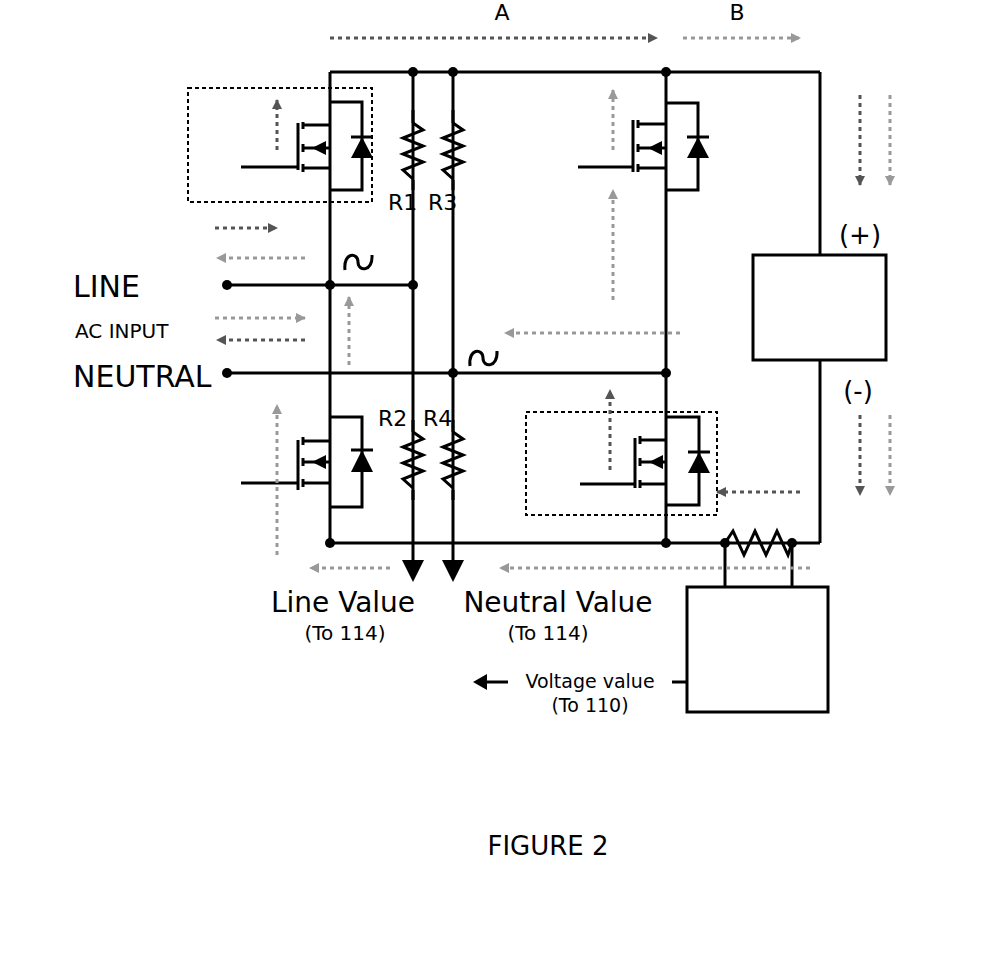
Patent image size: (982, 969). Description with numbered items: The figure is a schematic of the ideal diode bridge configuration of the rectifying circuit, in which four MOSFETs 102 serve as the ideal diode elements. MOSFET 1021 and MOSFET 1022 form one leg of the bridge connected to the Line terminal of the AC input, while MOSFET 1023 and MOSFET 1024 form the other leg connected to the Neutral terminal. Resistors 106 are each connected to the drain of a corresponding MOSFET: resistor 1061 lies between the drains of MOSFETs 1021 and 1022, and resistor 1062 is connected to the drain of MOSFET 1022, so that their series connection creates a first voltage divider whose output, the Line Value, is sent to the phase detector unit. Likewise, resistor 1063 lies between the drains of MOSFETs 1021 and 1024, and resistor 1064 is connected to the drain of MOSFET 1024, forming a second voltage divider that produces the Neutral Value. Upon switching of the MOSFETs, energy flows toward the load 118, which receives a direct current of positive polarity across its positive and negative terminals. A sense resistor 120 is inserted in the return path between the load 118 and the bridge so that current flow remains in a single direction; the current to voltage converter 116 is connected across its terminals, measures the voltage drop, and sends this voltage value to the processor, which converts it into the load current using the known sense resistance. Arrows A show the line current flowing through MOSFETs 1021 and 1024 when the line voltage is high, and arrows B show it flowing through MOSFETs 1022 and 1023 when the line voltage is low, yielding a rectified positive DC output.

The MOSFETs 102 is at (463, 277).
The MOSFET 1021 is at (312, 88).
The MOSFET 1022 is at (325, 428).
The MOSFET 1023 is at (661, 118).
The MOSFET 1024 is at (717, 435).
The resistors 106 is at (421, 292).
The resistor 1061 is at (400, 102).
The resistor 1062 is at (410, 460).
The resistor 1063 is at (467, 158).
The resistor 1064 is at (463, 470).
The current to voltage converter 116 is at (828, 672).
The load 118 is at (886, 290).
The resistor 120 is at (773, 530).